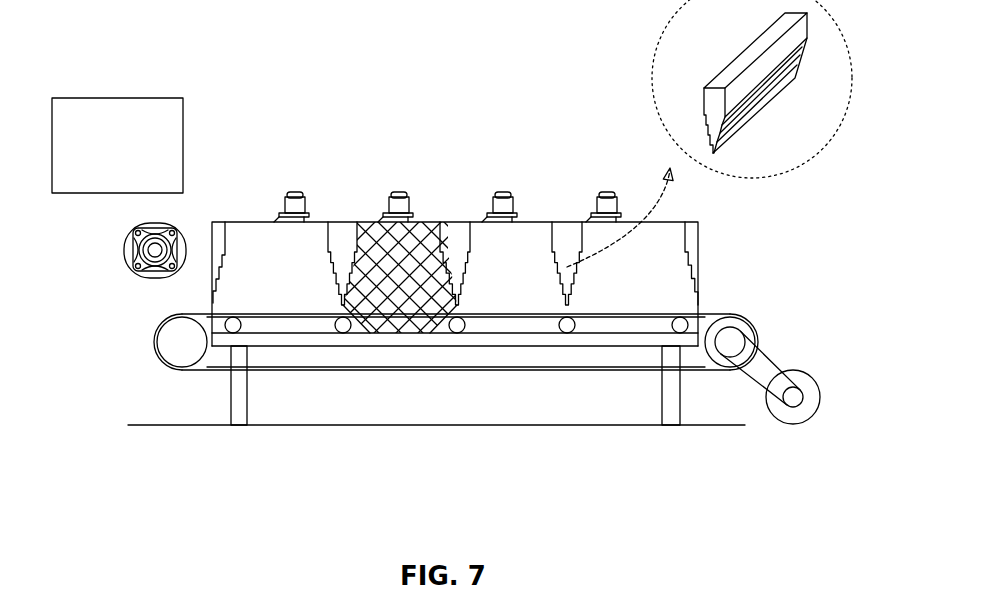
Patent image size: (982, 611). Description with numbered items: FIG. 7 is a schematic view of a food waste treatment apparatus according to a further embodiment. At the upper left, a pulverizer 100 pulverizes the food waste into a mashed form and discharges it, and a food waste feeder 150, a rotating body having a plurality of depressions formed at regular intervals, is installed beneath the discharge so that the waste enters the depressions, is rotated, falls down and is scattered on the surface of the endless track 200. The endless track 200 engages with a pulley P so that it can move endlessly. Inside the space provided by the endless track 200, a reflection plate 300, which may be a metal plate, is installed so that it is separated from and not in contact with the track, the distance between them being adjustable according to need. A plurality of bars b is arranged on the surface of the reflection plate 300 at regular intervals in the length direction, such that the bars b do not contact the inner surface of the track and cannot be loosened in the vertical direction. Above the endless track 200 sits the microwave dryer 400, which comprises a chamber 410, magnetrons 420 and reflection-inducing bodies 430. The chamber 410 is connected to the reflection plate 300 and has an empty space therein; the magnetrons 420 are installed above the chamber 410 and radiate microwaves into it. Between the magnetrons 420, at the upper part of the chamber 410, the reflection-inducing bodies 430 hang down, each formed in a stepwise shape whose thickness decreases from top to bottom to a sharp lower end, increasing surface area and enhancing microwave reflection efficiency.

The pulverizer 100 is at (125, 118).
The food waste feeder 150 is at (128, 250).
The endless track 200 is at (283, 368).
The reflection plate 300 is at (457, 398).
The microwave dryer 400 is at (532, 173).
The chamber 410 is at (542, 222).
The magnetron 420 is at (505, 218).
The reflection-inducing body 430 is at (453, 227).
The pulley p is at (178, 348).
The bar b is at (448, 345).